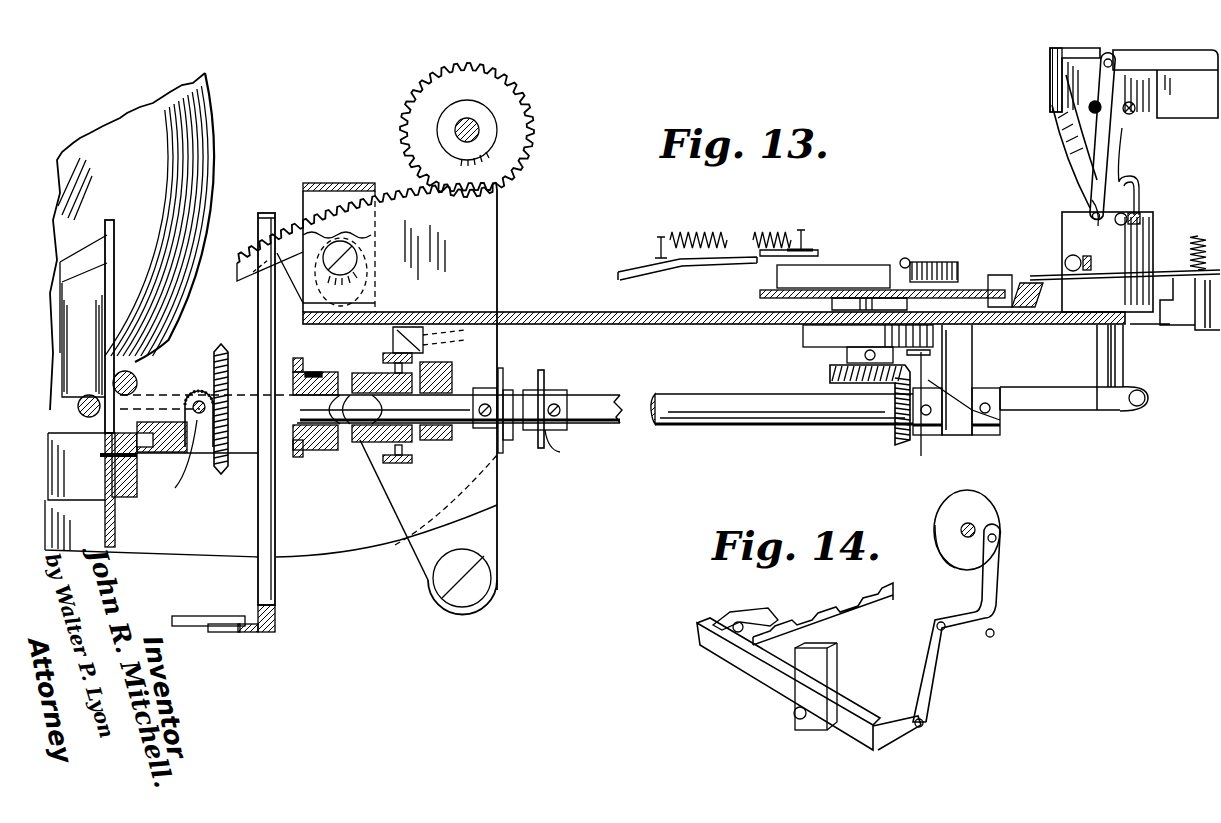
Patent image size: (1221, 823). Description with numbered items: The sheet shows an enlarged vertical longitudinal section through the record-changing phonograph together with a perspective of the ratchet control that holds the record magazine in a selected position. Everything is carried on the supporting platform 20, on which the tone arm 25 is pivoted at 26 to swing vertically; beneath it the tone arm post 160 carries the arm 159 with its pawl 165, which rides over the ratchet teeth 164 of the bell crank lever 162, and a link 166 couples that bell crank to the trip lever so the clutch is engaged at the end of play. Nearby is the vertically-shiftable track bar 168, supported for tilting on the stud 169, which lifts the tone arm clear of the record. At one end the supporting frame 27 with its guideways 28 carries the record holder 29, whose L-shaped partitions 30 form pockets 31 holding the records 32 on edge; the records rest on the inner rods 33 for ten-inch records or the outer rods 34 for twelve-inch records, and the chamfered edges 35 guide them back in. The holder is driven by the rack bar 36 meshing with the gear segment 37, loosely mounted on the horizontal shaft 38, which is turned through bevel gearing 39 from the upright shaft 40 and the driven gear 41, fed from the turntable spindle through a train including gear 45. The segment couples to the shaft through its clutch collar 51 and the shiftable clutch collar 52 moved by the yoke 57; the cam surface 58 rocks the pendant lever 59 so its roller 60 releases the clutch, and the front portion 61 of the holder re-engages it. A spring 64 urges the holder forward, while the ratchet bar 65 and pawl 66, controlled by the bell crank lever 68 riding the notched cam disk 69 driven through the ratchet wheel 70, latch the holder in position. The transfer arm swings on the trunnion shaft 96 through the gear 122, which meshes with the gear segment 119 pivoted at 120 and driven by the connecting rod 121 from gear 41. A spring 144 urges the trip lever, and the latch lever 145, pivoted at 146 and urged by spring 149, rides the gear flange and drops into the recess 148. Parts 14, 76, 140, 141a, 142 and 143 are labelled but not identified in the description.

In FIG. 13, the gear link 14 is at (179, 465).
In FIG. 13, the supporting platform 20 is at (710, 328).
In FIG. 13, the tone arm 25 is at (1072, 48).
In FIG. 13, the tone arm pivot 26 is at (1132, 112).
In FIG. 13, the supporting frame 27 is at (175, 545).
In FIG. 13, the guideways or tracks 28 is at (163, 424).
In FIG. 13, the record holder 29 is at (99, 465).
In FIG. 13, the division plates or partitions 30 is at (83, 340).
In FIG. 13, the pockets 31 is at (263, 292).
In FIG. 13, the records 32 is at (216, 152).
In FIG. 13, the transverse rods 33 is at (86, 419).
In FIG. 13, the transverse rods 34 is at (131, 375).
In FIG. 13, the chamfered edges 35 is at (83, 294).
In FIG. 13, the rack bar 36 is at (278, 620).
In FIG. 13, the gear segment 37 is at (367, 243).
In FIG. 13, the horizontal shaft 38 is at (700, 427).
In FIG. 14, the horizontal shaft 38 is at (956, 526).
In FIG. 13, the bevel gearing 39 is at (893, 438).
In FIG. 13, the upright shaft 40 is at (842, 330).
In FIG. 13, the gear 41 is at (494, 440).
In FIG. 13, the gear 45 is at (196, 392).
In FIG. 13, the clutch collar 51 is at (325, 450).
In FIG. 13, the shiftable clutch collar 52 is at (380, 445).
In FIG. 13, the yoke 57 is at (412, 462).
In FIG. 13, the cam surface 58 is at (312, 366).
In FIG. 13, the pendant lever 59 is at (378, 328).
In FIG. 13, the roller 60 is at (336, 450).
In FIG. 13, the front portion of holder 61 is at (112, 304).
In FIG. 14, the spring 64 is at (755, 665).
In FIG. 14, the ratchet bar 65 is at (860, 606).
In FIG. 14, the pawl 66 is at (762, 612).
In FIG. 13, the bell crank lever 68 is at (549, 449).
In FIG. 14, the bell crank lever 68 is at (1003, 587).
In FIG. 13, the notched cam disk 69 is at (544, 373).
In FIG. 14, the notched cam disk 69 is at (996, 500).
In FIG. 13, the ratchet wheel 70 is at (499, 388).
In FIG. 13, the worm 76 is at (224, 472).
In FIG. 13, the trunnion shaft 96 is at (455, 127).
In FIG. 13, the gear segment 119 is at (487, 247).
In FIG. 13, the pivot 120 is at (483, 585).
In FIG. 13, the pitman or connecting rod 121 is at (622, 282).
In FIG. 13, the gear 122 is at (482, 71).
In FIG. 13, the bracket 140 is at (1197, 308).
In FIG. 13, the lever arm 141a is at (1140, 210).
In FIG. 13, the lever 142 is at (1073, 220).
In FIG. 13, the pin 143 is at (1070, 237).
In FIG. 13, the coil spring 144 is at (1045, 290).
In FIG. 13, the latch lever 145 is at (1066, 262).
In FIG. 13, the pivot 146 is at (1025, 290).
In FIG. 13, the recess 148 is at (937, 258).
In FIG. 13, the spring 149 is at (902, 260).
In FIG. 13, the arm 159 is at (1065, 406).
In FIG. 13, the tone arm post 160 is at (1122, 364).
In FIG. 13, the bell crank lever 162 is at (997, 430).
In FIG. 13, the ratchet teeth 164 is at (940, 445).
In FIG. 13, the pawl 165 is at (919, 444).
In FIG. 13, the link 166 is at (932, 363).
In FIG. 13, the track bar 168 is at (1107, 220).
In FIG. 13, the stud 169 is at (1125, 247).